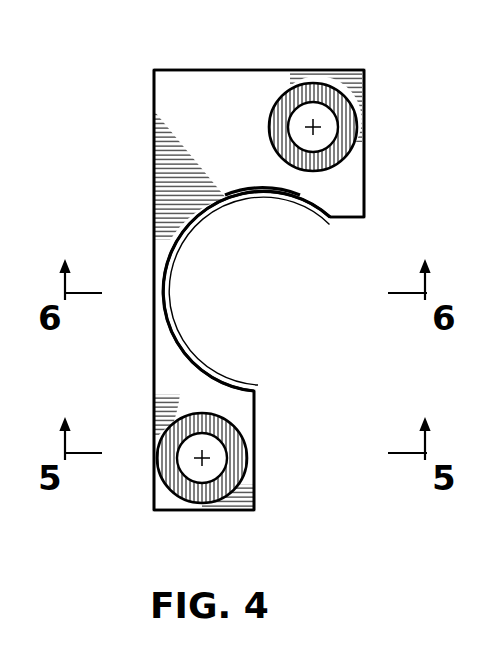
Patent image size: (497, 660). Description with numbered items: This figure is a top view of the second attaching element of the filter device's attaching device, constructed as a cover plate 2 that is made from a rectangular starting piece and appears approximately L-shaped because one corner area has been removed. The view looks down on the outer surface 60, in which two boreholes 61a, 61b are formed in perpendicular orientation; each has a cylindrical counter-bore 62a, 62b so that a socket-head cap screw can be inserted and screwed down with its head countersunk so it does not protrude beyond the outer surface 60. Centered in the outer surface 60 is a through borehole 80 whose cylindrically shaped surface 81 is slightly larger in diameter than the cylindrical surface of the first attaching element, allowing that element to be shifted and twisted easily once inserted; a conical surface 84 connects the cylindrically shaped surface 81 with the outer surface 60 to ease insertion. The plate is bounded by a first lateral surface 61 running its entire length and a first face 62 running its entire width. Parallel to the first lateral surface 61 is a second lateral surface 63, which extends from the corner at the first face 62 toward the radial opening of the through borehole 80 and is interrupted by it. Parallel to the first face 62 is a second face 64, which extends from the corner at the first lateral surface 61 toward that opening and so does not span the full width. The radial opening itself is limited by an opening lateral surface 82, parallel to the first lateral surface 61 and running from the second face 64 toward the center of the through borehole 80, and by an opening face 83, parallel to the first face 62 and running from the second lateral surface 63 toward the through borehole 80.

The cover plate 2 is at (122, 60).
The outer surface 60 is at (216, 141).
The first lateral surface 61 is at (153, 246).
The borehole 61a is at (183, 456).
The borehole 61b is at (334, 131).
The first face 62 is at (236, 70).
The cylindrical counter-bore 62a is at (160, 393).
The cylindrical counter-bore 62b is at (331, 88).
The second lateral surface 63 is at (366, 160).
The second face 64 is at (196, 512).
The through borehole 80 is at (265, 303).
The cylindrically shaped surface 81 is at (238, 203).
The opening lateral surface 82 is at (257, 412).
The opening face 83 is at (355, 219).
The conical surface 84 is at (176, 242).